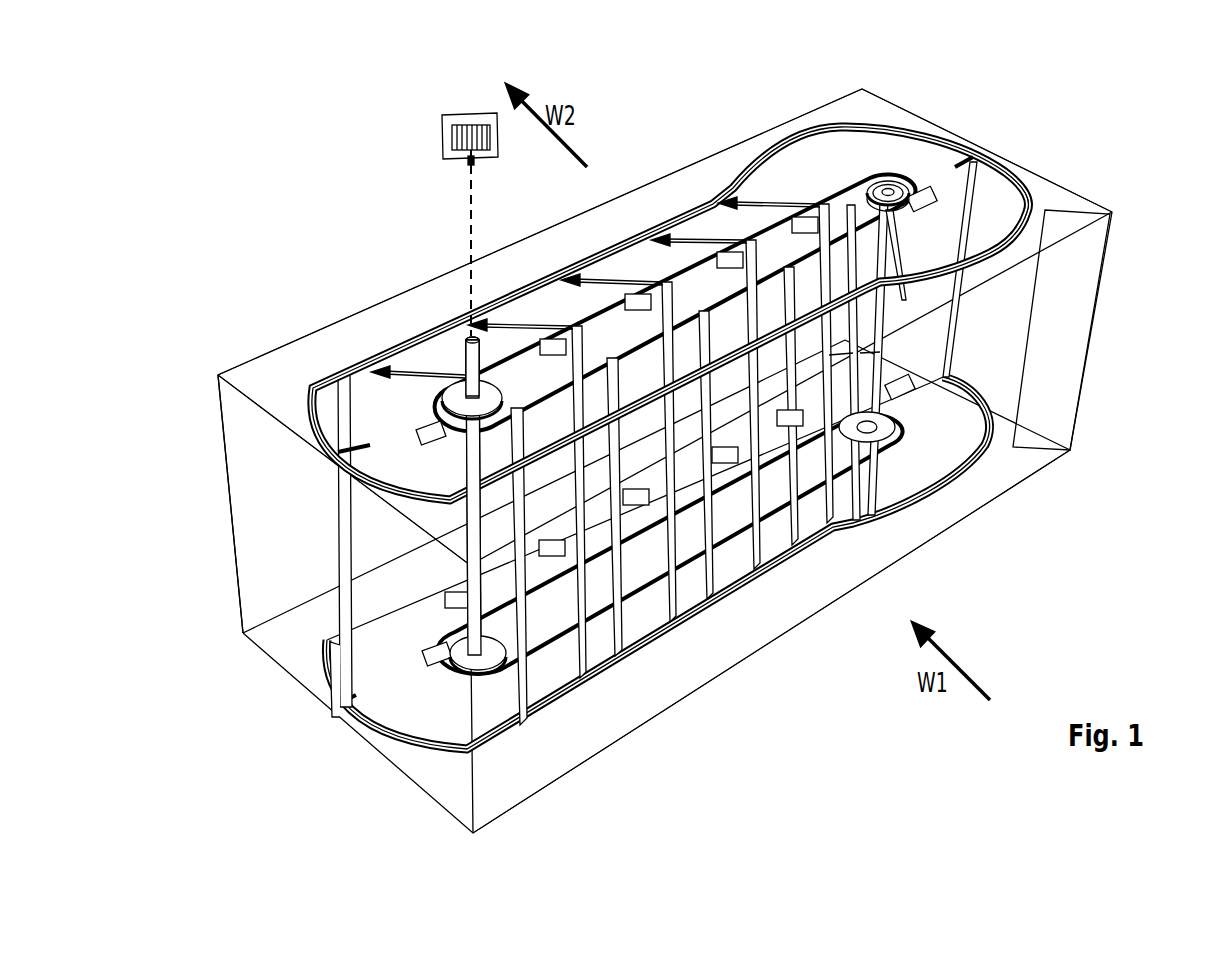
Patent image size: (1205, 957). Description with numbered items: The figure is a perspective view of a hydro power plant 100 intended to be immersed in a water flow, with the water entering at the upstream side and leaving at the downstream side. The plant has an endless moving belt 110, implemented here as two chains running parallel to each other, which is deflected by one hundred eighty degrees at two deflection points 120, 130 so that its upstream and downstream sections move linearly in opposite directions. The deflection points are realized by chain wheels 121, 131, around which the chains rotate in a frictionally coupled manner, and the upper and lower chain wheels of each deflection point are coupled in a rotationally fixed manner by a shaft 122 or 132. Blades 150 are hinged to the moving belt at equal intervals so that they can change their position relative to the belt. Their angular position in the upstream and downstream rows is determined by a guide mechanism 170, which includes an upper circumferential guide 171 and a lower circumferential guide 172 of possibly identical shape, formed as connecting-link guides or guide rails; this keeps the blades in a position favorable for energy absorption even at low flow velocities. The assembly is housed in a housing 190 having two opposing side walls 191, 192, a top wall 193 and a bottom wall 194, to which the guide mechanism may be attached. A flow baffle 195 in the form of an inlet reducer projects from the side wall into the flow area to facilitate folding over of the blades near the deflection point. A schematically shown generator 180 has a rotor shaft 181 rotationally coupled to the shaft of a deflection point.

The hydro power plant 100 is at (268, 152).
The endless moving belt 110 is at (833, 190).
The deflection point 120 is at (420, 388).
The chain wheel 121 is at (490, 395).
The shaft 122 is at (463, 340).
The deflection point 130 is at (905, 165).
The chain wheel 131 is at (892, 185).
The shaft 132 is at (890, 228).
The blade 150 is at (598, 303).
The guide mechanism 170 is at (725, 170).
The upper circumferential guide 171 is at (1017, 257).
The lower circumferential guide 172 is at (667, 633).
The generator 180 is at (445, 142).
The rotor shaft 181 is at (463, 165).
The housing 190 is at (228, 352).
The side wall 191 is at (244, 591).
The side wall 192 is at (877, 104).
The top wall 193 is at (292, 355).
The bottom wall 194 is at (546, 752).
The flow baffle 195 is at (1030, 440).